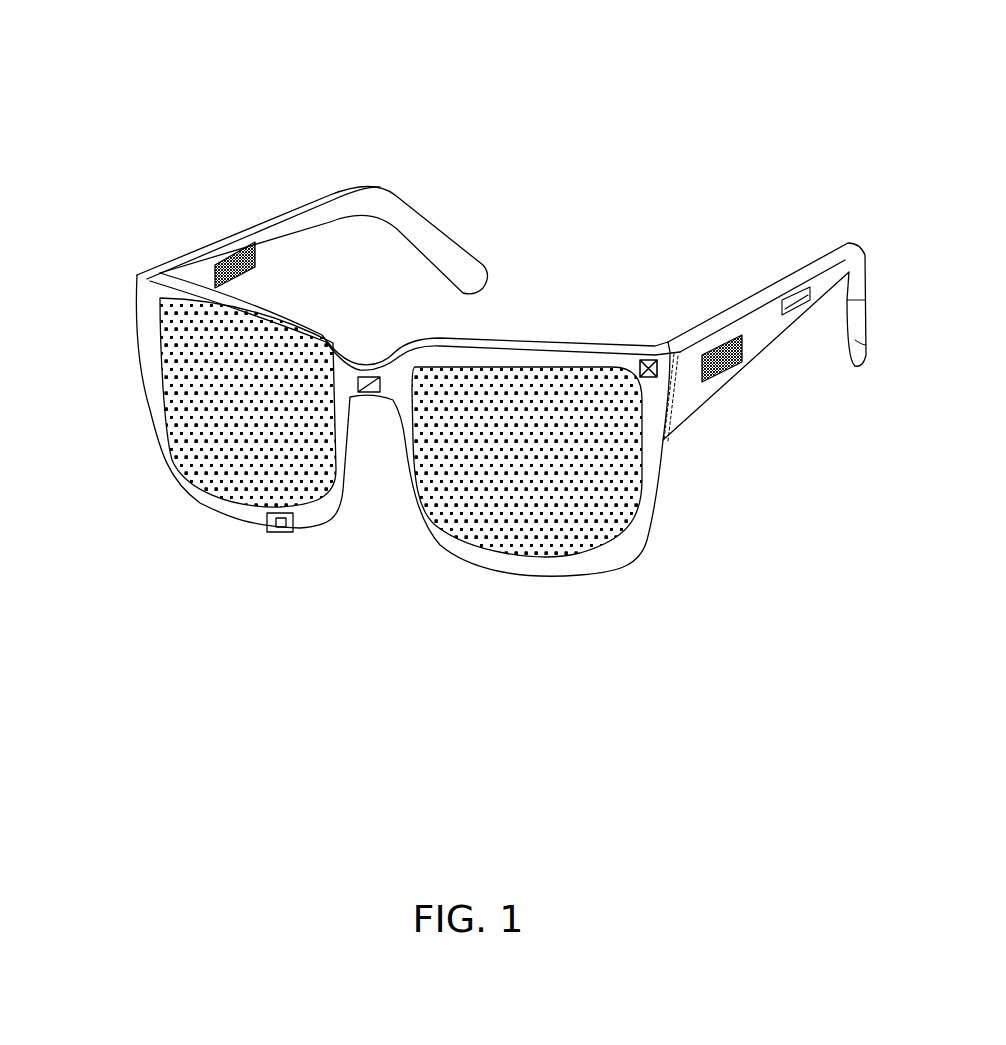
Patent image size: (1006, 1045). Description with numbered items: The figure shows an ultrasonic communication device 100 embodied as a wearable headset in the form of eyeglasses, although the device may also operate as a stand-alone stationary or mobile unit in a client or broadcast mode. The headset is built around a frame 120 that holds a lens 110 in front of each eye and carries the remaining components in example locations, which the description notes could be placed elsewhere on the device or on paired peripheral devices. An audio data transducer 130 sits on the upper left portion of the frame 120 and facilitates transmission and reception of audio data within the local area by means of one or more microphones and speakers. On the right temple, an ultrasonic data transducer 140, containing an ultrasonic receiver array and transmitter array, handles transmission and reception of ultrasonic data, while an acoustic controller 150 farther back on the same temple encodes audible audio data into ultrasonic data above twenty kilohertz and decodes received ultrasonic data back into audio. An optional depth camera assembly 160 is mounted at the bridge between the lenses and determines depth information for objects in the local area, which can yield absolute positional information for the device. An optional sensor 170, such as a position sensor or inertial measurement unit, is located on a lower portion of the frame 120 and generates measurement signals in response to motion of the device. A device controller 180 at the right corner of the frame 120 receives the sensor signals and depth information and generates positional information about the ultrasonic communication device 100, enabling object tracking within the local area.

The ultrasonic communication device 100 is at (535, 428).
The lens 110 is at (170, 455).
The frame 120 is at (845, 243).
The audio data transducer 130 is at (238, 243).
The ultrasonic data transducer 140 is at (725, 370).
The acoustic controller 150 is at (787, 292).
The depth camera assembly 160 is at (372, 378).
The sensor 170 is at (257, 532).
The device controller 180 is at (660, 374).